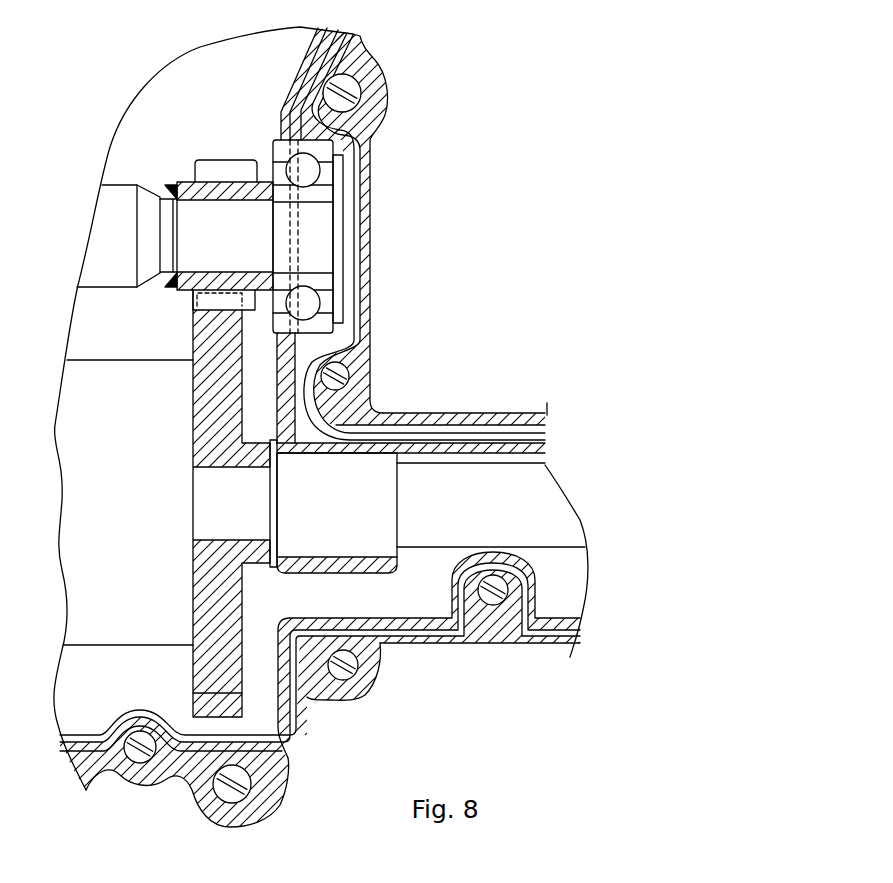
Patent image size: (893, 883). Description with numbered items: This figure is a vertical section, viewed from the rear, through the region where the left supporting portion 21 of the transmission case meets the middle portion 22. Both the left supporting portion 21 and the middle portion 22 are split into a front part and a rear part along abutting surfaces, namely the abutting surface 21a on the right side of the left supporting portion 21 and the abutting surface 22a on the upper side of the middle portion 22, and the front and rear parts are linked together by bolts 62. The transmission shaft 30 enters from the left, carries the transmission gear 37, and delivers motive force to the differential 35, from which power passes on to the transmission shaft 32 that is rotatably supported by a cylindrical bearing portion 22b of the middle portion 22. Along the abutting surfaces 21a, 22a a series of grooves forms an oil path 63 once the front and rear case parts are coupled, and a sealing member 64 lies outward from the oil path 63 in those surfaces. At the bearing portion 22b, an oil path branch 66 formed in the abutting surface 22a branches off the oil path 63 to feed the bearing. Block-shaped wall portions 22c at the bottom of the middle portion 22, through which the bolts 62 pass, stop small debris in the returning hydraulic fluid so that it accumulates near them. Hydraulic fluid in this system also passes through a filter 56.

The transmission shaft 30 is at (122, 188).
The differential 35 is at (107, 367).
The transmission gear 37 is at (222, 162).
The filter 56 is at (318, 168).
The oil path 63 is at (303, 73).
The left supporting portion 21 is at (396, 236).
The abutting surface 21a is at (372, 236).
The sealing member 64 is at (368, 302).
The middle portion 22 is at (466, 385).
The abutting surface 22a is at (488, 413).
The cylindrical bearing portion 22b is at (340, 575).
The wall portion 22c is at (457, 573).
The oil path branch 66 is at (337, 455).
The transmission shaft 32 is at (553, 540).
The bolt 62 is at (357, 88).